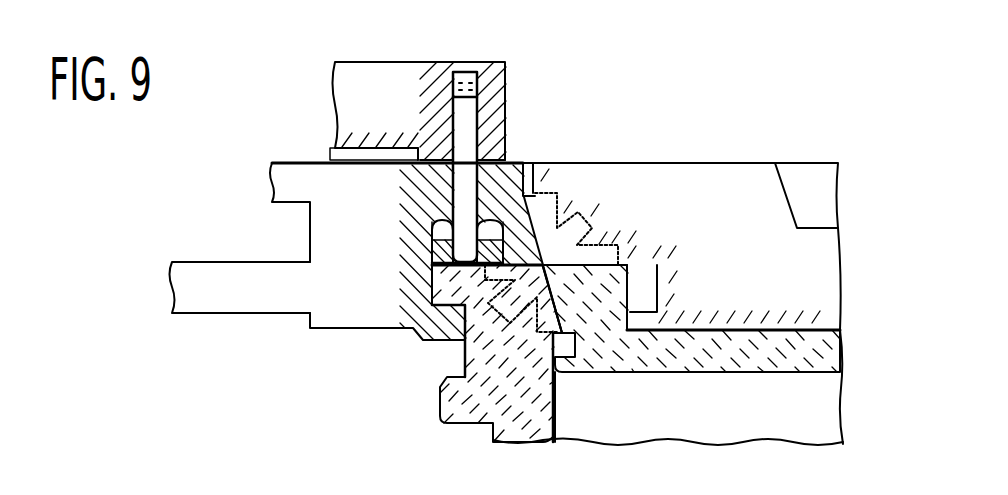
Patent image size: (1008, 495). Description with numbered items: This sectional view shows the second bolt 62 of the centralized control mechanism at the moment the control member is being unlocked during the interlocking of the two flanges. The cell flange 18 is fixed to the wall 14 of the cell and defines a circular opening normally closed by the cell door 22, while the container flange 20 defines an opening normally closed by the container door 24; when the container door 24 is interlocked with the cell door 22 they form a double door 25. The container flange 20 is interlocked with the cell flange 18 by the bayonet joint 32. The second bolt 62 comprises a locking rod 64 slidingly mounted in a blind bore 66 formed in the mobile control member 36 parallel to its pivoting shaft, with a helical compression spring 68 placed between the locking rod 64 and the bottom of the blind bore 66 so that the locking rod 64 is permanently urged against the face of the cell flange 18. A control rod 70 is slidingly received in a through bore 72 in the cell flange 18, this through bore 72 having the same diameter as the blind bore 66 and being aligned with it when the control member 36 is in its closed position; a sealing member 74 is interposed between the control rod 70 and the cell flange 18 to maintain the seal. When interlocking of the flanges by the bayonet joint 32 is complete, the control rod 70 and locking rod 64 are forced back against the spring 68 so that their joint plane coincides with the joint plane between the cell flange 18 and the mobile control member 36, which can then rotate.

The wall 14 is at (240, 260).
The cell flange 18 is at (340, 303).
The container flange 20 is at (473, 392).
The cell door 22 is at (682, 217).
The container door 24 is at (793, 363).
The double door 25 is at (808, 163).
The bayonet joint 32 is at (428, 347).
The mobile control member 36 is at (339, 73).
The second bolt 62 is at (498, 108).
The locking rod 64 is at (493, 127).
The blind bore 66 is at (423, 144).
The helical compression spring 68 is at (438, 88).
The control rod 70 is at (483, 183).
The through bore 72 is at (455, 192).
The sealing member 74 is at (432, 228).